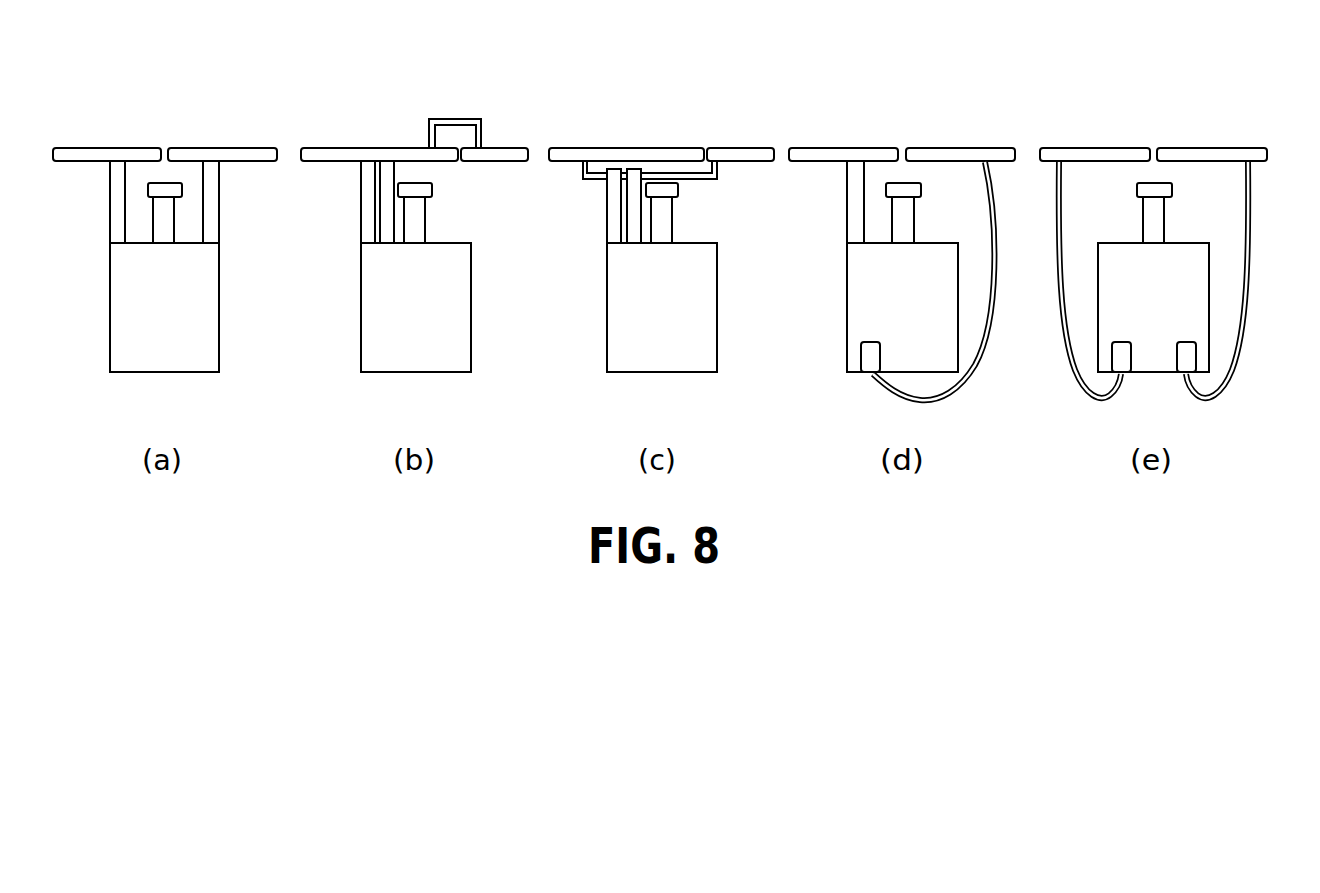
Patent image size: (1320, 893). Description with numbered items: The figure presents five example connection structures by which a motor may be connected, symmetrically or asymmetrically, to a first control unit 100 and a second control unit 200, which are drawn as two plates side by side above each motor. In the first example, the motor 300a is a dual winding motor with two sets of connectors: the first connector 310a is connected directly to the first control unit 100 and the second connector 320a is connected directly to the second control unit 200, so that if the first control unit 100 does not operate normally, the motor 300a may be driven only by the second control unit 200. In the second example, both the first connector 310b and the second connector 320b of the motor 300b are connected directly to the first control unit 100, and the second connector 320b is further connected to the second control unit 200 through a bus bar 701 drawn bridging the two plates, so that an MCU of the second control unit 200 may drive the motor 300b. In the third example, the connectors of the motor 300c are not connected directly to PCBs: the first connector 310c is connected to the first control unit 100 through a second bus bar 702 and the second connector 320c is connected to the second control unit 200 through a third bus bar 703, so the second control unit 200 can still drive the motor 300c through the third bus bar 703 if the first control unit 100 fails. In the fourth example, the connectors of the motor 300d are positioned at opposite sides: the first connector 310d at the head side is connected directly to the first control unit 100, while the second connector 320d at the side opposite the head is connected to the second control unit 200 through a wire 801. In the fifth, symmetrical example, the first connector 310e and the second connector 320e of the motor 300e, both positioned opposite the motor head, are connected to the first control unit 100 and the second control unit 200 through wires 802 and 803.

The first control unit 100 is at (71, 147).
The second control unit 200 is at (252, 147).
The motor 300a is at (117, 306).
The first connector 310a is at (117, 215).
The second connector 320a is at (215, 216).
The motor 300b is at (367, 305).
The first connector 310b is at (366, 185).
The second connector 320b is at (384, 222).
The bus bar 701 is at (444, 118).
The second bus bar 702 is at (578, 172).
The third bus bar 703 is at (717, 170).
The motor 300c is at (613, 307).
The first connector 310c is at (605, 210).
The second connector 320c is at (616, 228).
The motor 300d is at (857, 305).
The first connector 310d is at (847, 210).
The second connector 320d is at (868, 353).
The wire 801 is at (884, 391).
The motor 300e is at (1193, 311).
The first connector 310e is at (1117, 355).
The second connector 320e is at (1193, 354).
The wire 802 is at (1097, 395).
The wire 803 is at (1220, 398).